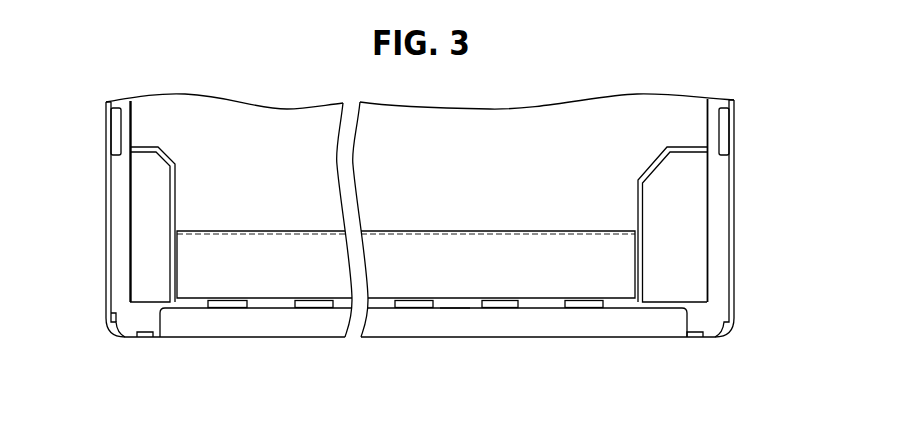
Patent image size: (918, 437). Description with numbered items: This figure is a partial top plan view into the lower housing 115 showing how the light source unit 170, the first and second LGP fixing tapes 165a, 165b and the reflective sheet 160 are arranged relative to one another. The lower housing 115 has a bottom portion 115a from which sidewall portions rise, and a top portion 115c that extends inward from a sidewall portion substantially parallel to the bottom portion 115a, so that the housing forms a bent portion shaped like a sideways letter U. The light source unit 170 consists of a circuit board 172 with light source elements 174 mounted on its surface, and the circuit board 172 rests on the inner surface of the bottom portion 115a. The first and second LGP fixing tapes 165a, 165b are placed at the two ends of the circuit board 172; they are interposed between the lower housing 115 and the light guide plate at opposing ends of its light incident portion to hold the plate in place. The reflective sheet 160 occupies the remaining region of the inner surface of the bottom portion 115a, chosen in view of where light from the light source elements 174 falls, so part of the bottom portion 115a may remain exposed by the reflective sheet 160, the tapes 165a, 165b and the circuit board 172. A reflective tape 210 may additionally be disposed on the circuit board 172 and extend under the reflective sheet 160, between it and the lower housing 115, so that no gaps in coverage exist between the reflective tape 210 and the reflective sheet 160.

The lower housing 115 is at (122, 198).
The bottom portion 115a is at (133, 310).
The top portion 115c is at (545, 320).
The reflective sheet 160 is at (137, 122).
The first LGP fixing tape 165a is at (142, 290).
The second LGP fixing tape 165b is at (685, 252).
The reflective tape 210 is at (195, 258).
The light source unit 170 is at (405, 356).
The circuit board 172 is at (455, 307).
The light source elements 174 is at (498, 307).